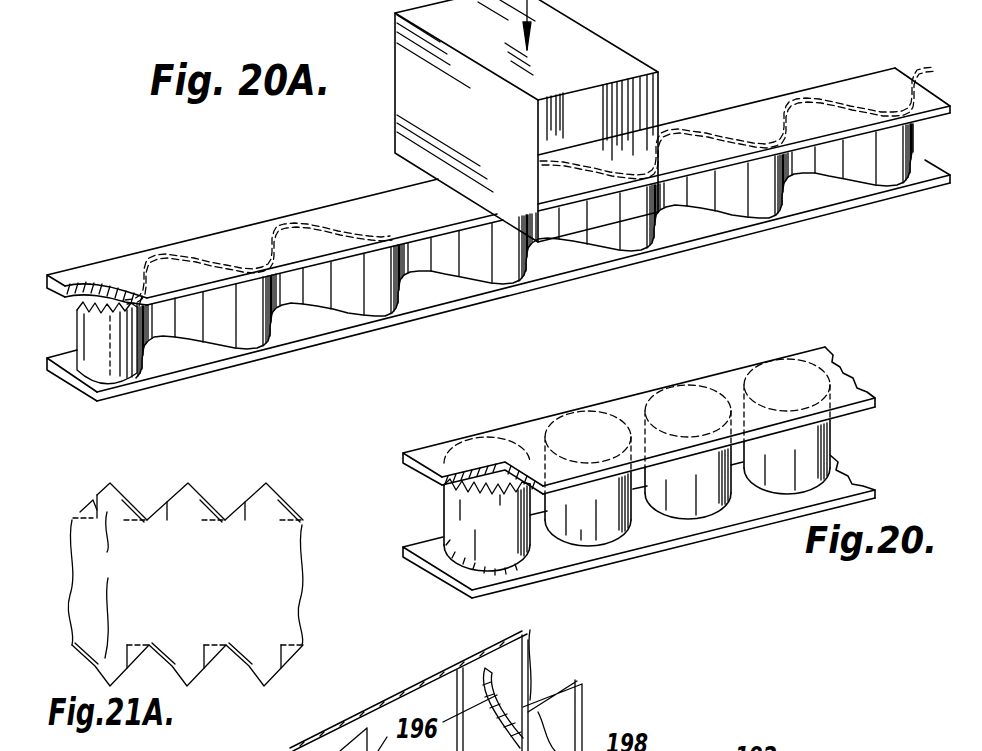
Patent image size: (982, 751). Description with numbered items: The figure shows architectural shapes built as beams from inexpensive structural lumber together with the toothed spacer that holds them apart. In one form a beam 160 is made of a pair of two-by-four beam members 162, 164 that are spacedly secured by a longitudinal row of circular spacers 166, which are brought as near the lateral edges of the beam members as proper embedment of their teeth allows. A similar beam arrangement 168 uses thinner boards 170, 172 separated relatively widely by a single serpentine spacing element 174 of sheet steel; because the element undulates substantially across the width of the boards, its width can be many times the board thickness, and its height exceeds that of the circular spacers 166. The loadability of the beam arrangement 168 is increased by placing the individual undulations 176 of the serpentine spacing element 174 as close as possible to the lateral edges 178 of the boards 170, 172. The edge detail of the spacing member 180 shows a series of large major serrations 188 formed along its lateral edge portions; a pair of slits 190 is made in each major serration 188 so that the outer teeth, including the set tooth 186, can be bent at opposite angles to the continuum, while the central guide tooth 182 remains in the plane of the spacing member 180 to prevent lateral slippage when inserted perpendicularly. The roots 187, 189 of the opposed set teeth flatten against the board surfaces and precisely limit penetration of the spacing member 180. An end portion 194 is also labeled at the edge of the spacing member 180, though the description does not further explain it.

In FIG. 20, the beam 160 is at (572, 378).
In FIG. 20, the beam member 162 is at (810, 362).
In FIG. 20, the beam member 164 is at (852, 485).
In FIG. 20, the circular spacer 166 is at (513, 553).
In FIG. 20A, the beam arrangement 168 is at (723, 107).
In FIG. 20A, the board 170 is at (857, 88).
In FIG. 20A, the board 172 is at (847, 187).
In FIG. 20A, the serpentine spacing element 174 is at (220, 317).
In FIG. 20A, the undulation 176 is at (367, 303).
In FIG. 20A, the lateral edge 178 is at (447, 231).
In FIG. 21A, the spacing member 180 is at (302, 590).
In FIG. 21A, the guide tooth 182 is at (121, 585).
In FIG. 21A, the set tooth 186 is at (132, 518).
In FIG. 21A, the root 187 is at (242, 525).
In FIG. 21A, the major serration 188 is at (170, 581).
In FIG. 21A, the root 189 is at (282, 518).
In FIG. 21A, the slit 190 is at (123, 501).
In FIG. 21A, the end flap 194 is at (86, 503).